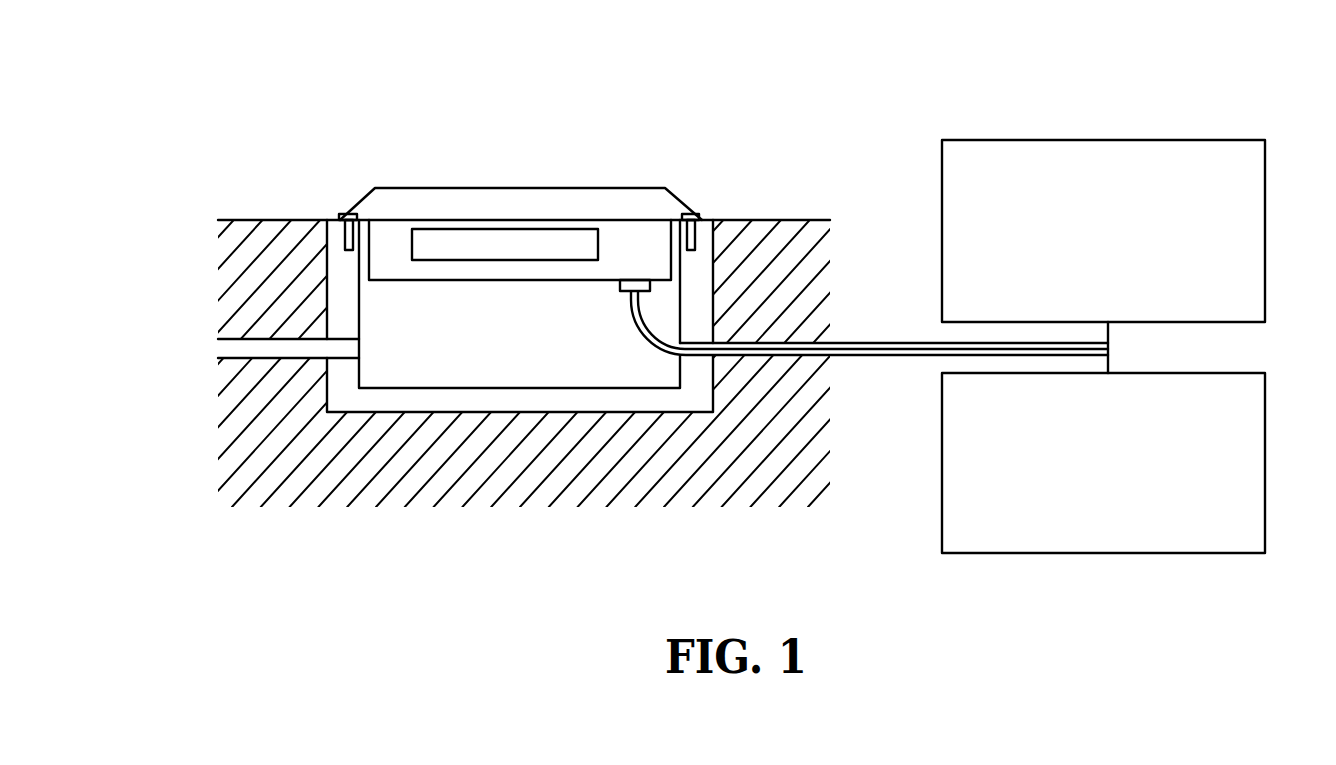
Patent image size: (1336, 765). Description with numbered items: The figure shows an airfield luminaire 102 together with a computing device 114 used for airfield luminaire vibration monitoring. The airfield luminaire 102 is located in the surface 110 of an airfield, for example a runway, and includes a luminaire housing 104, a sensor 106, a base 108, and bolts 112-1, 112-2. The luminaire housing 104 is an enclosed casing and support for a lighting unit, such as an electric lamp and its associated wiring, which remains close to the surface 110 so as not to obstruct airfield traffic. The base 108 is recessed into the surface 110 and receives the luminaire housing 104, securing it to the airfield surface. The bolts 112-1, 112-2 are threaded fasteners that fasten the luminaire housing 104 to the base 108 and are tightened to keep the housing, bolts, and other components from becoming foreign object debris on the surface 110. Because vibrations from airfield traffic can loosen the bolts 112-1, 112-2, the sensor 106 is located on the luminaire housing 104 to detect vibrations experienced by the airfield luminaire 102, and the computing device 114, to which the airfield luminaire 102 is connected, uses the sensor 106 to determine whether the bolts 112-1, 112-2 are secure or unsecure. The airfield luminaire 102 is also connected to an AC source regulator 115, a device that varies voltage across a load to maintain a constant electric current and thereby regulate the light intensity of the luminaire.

The airfield luminaire 102 is at (631, 247).
The luminaire housing 104 is at (345, 213).
The sensor 106 is at (413, 242).
The base 108 is at (330, 322).
The surface 110 is at (255, 220).
The bolt 112-1 is at (343, 213).
The bolt 112-2 is at (690, 215).
The computing device 114 is at (1102, 140).
The AC source regulator 115 is at (1130, 553).